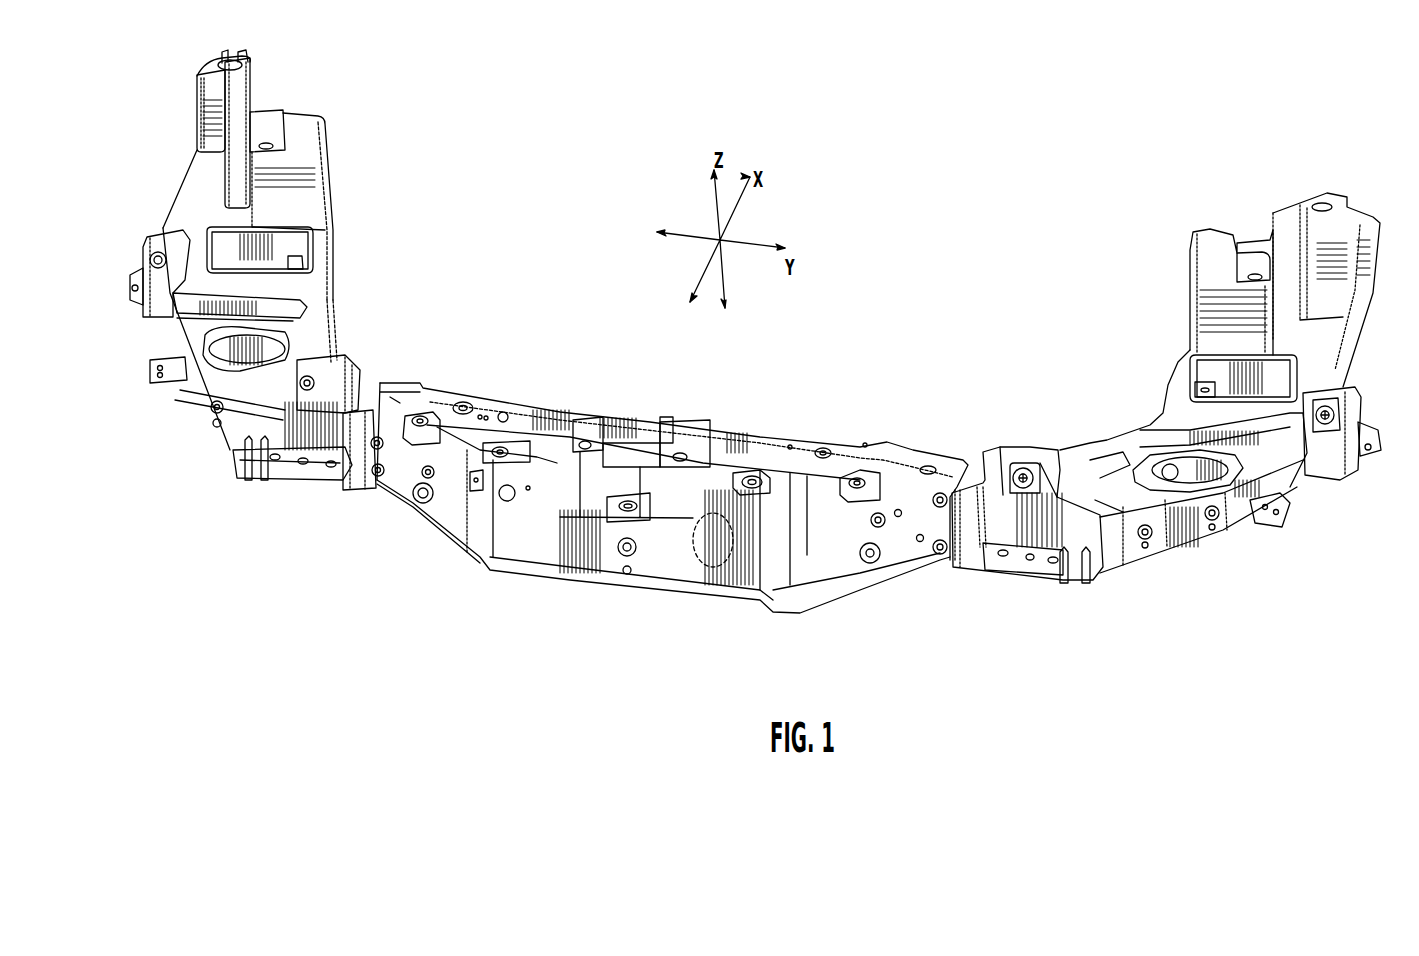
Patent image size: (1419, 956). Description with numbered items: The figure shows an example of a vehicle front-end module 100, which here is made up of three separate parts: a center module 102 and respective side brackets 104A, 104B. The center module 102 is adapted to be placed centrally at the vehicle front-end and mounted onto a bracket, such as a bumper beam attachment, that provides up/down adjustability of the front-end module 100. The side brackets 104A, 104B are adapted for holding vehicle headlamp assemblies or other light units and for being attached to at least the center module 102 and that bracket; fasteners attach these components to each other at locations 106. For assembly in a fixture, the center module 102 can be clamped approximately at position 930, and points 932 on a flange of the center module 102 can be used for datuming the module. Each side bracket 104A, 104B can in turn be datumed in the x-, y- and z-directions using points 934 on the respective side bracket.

The front-end module 100 is at (1113, 645).
The center module 102 is at (597, 584).
The side bracket 104A is at (1153, 560).
The side bracket 104B is at (300, 487).
The locations 106 is at (378, 505).
The position 930 is at (735, 552).
The points 932 is at (465, 403).
The points 934 is at (1030, 468).